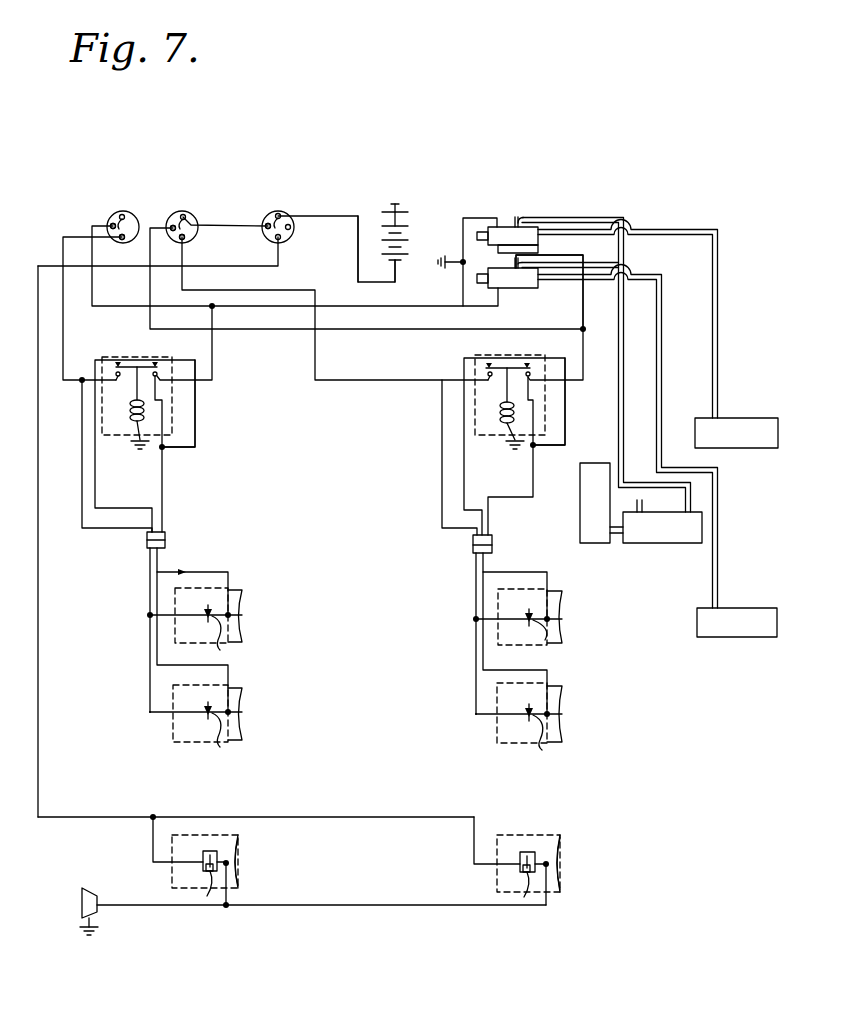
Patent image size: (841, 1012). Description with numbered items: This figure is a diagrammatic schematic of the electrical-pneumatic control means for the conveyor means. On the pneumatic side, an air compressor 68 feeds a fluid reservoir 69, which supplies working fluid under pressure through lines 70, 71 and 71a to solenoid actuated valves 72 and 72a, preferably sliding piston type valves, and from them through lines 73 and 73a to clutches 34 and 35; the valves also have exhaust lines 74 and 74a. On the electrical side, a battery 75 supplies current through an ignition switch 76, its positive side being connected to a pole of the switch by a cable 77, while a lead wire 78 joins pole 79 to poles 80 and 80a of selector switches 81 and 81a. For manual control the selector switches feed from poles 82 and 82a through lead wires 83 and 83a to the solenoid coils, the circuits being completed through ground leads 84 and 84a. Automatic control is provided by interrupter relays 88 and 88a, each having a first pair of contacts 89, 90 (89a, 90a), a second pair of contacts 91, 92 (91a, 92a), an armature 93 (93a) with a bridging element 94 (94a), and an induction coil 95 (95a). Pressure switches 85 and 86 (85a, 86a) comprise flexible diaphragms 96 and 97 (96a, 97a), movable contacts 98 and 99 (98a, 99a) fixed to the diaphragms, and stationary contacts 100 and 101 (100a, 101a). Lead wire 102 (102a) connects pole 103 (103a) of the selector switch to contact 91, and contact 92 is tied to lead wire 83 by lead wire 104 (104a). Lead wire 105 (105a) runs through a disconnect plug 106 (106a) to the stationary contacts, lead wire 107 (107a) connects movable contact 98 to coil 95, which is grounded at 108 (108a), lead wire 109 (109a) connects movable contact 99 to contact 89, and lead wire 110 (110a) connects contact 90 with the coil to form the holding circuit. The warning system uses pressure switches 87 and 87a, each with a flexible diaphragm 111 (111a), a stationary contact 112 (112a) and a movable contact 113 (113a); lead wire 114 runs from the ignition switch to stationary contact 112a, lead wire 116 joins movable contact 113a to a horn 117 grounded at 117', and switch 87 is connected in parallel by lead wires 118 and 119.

The clutch 34 is at (737, 610).
The clutch 35 is at (763, 408).
The air compressor 68 is at (579, 505).
The fluid reservoir 69 is at (665, 543).
The line 70 is at (278, 212).
The line 71 is at (607, 257).
The line 71a is at (600, 217).
The solenoid actuated valve 72 is at (524, 288).
The solenoid actuated valve 72a is at (507, 218).
The line 73 is at (660, 328).
The line 73a is at (718, 294).
The exhaust line 74 is at (531, 254).
The exhaust line 74a is at (522, 218).
The battery 75 is at (400, 228).
The ignition switch 76 is at (293, 214).
The cable 77 is at (358, 244).
The lead wire 78 is at (233, 226).
The pole 79 is at (269, 239).
The pole 80 is at (126, 213).
The pole 80a is at (188, 213).
The selector switch 81 is at (130, 212).
The selector switch 81a is at (192, 212).
The pole 82 is at (107, 221).
The pole 82a is at (174, 233).
The lead wire 83 is at (115, 298).
The lead wire 83a is at (392, 330).
The ground lead 84 is at (468, 267).
The ground lead 84a is at (473, 211).
The pressure switch 85 is at (237, 587).
The pressure switch 85a is at (556, 592).
The pressure switch 86 is at (237, 691).
The pressure switch 86a is at (557, 684).
The pressure switch 87 is at (226, 832).
The pressure switch 87a is at (559, 833).
The interrupter relay 88 is at (174, 409).
The interrupter relay 88a is at (550, 418).
The contact 89 is at (118, 361).
The contact 89a is at (487, 361).
The contact 90 is at (158, 361).
The contact 90a is at (527, 362).
The contact 91 is at (121, 378).
The contact 91a is at (493, 378).
The contact 92 is at (153, 377).
The contact 92a is at (525, 379).
The armature 93 is at (128, 397).
The armature 93a is at (498, 403).
The bridging element 94 is at (138, 363).
The bridging element 94a is at (507, 363).
The induction coil 95 is at (130, 427).
The induction coil 95a is at (498, 431).
The flexible diaphragm 96 is at (243, 628).
The flexible diaphragm 96a is at (567, 630).
The flexible diaphragm 97 is at (244, 729).
The flexible diaphragm 97a is at (567, 726).
The movable contact 98 is at (226, 641).
The movable contact 98a is at (546, 640).
The movable contact 99 is at (227, 740).
The movable contact 99a is at (549, 744).
The stationary contact 100 is at (207, 619).
The stationary contact 100a is at (532, 624).
The stationary contact 101 is at (206, 717).
The stationary contact 101a is at (525, 717).
The lead wire 102 is at (62, 247).
The lead wire 102a is at (184, 285).
The pole 103 is at (120, 241).
The pole 103a is at (190, 240).
The lead wire 104 is at (213, 356).
The lead wire 104a is at (584, 347).
The lead wire 105 is at (82, 479).
The lead wire 105a is at (443, 454).
The disconnect plug 106 is at (167, 540).
The disconnect plug 106a is at (494, 545).
The lead wire 107 is at (165, 480).
The lead wire 107a is at (489, 516).
The ground 108 is at (150, 444).
The ground 108a is at (518, 453).
The lead wire 109 is at (154, 584).
The lead wire 109a is at (474, 585).
The lead wire 110 is at (197, 438).
The lead wire 110a is at (552, 450).
The flexible diaphragm 111 is at (238, 878).
The flexible diaphragm 111a is at (559, 873).
The stationary contact 112 is at (202, 893).
The stationary contact 112a is at (527, 876).
The movable contact 113 is at (205, 851).
The movable contact 113a is at (518, 854).
The lead wire 114 is at (40, 677).
The lead wire 116 is at (291, 248).
The horn 117 is at (66, 904).
The ground 117' is at (108, 929).
The lead wire 118 is at (152, 838).
The lead wire 119 is at (228, 898).